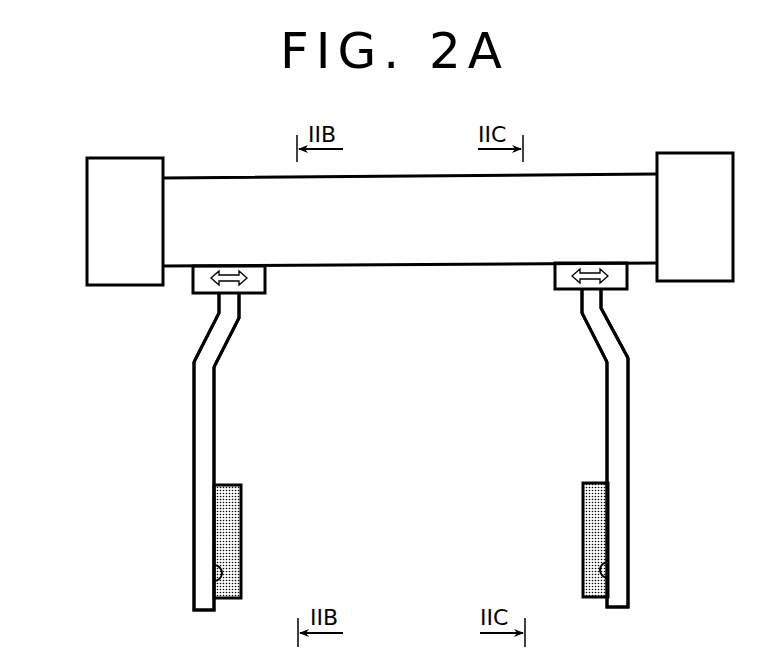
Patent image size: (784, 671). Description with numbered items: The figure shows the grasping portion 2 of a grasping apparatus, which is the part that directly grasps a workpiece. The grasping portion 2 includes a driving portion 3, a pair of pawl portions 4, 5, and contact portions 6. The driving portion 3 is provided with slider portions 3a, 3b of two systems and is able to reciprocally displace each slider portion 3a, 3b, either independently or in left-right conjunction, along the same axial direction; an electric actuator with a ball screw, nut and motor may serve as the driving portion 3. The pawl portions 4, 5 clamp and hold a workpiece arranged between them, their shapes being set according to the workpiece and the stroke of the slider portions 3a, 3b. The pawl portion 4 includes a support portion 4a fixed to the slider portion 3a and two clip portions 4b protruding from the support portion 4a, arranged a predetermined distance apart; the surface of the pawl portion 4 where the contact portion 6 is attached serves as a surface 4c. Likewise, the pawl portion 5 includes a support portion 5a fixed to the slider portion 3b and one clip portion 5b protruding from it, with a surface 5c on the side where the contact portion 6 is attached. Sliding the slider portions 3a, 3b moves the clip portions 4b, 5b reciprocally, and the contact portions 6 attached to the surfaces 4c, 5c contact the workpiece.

The grasping portion 2 is at (62, 159).
The driving portion 3 is at (401, 288).
The slider portion 3a is at (266, 287).
The slider portion 3b is at (554, 285).
The pawl portion 4 is at (184, 407).
The support portion 4a is at (226, 346).
The clip portion 4b is at (194, 482).
The surface 4c is at (220, 578).
The pawl portion 5 is at (641, 405).
The support portion 5a is at (592, 341).
The clip portion 5b is at (628, 478).
The surface 5c is at (603, 576).
The contact portion 6 is at (253, 531).